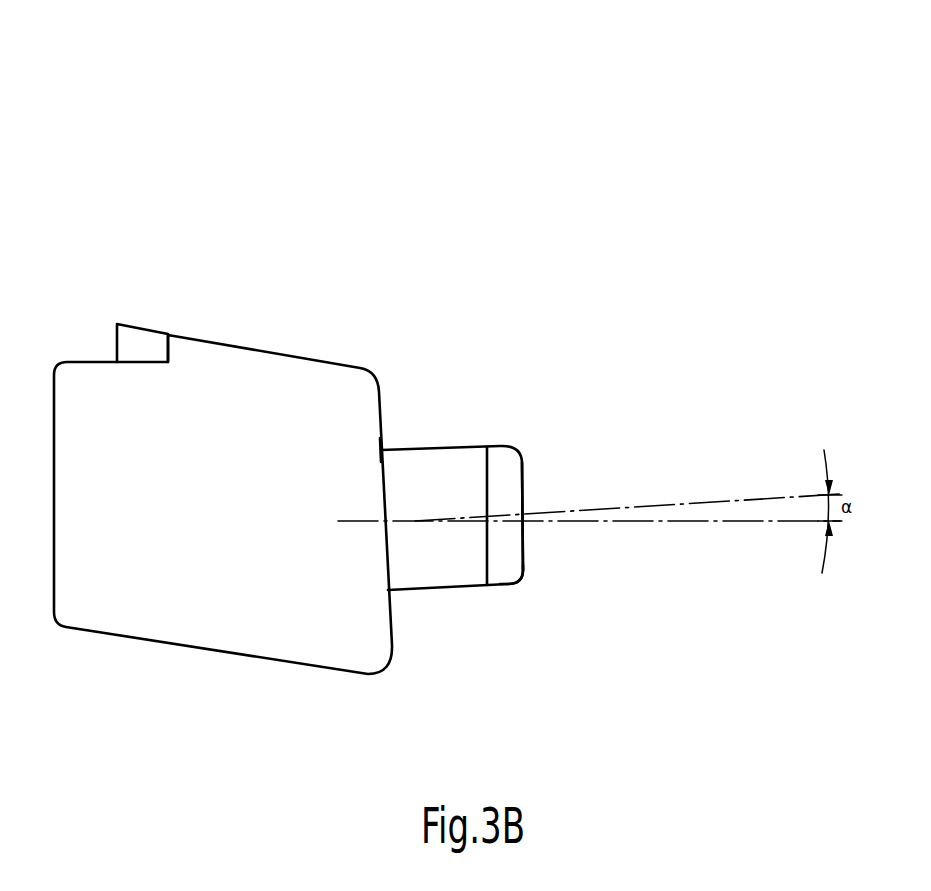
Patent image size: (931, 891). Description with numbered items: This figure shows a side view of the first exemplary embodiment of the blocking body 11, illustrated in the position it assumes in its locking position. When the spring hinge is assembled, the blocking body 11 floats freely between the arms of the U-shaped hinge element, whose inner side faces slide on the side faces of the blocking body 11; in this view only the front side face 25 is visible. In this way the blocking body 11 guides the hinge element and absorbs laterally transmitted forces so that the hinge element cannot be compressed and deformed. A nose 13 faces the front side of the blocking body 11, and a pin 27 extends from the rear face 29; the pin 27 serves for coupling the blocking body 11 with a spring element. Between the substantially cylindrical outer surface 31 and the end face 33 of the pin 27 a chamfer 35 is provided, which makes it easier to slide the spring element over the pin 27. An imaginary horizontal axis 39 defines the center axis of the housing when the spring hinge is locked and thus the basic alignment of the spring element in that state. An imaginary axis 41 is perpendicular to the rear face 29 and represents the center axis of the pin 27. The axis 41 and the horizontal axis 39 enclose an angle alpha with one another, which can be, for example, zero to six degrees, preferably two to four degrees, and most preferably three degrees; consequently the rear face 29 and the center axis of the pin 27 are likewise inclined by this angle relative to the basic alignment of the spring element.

The blocking body 11 is at (286, 228).
The nose 13 is at (140, 342).
The front side face 25 is at (150, 583).
The pin 27 is at (427, 563).
The rear face 29 is at (388, 411).
The outer surface 31 is at (437, 485).
The end face 33 is at (528, 468).
The chamfer 35 is at (510, 582).
The horizontal axis 39 is at (663, 522).
The axis 41 is at (621, 502).